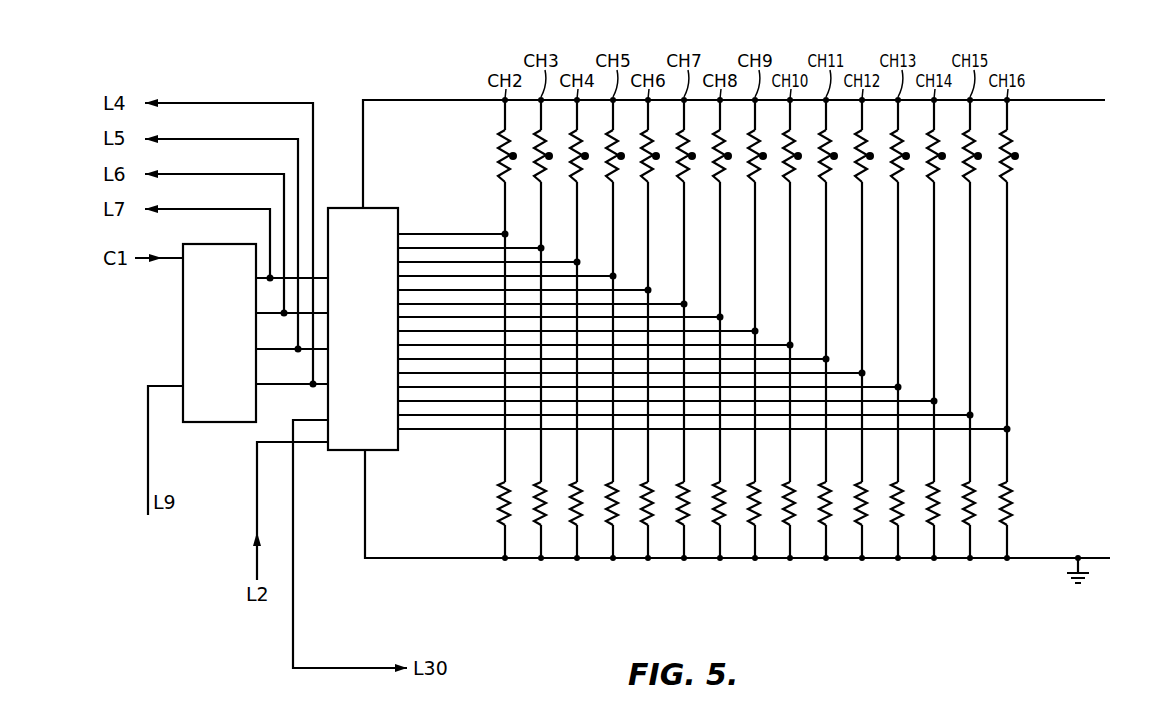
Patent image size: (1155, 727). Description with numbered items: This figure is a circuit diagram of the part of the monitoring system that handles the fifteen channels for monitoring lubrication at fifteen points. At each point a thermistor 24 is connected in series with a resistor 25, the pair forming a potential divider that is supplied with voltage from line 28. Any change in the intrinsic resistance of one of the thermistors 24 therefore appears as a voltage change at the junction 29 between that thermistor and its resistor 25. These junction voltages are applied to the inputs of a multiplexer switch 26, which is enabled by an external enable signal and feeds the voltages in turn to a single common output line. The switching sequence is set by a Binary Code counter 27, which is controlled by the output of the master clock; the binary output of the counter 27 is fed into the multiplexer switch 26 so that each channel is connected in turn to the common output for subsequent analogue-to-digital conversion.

The thermistor 24 is at (893, 172).
The resistor 25 is at (900, 490).
The multiplexer switch 26 is at (377, 372).
The Binary Code counter 27 is at (231, 372).
The line 28 is at (1083, 100).
The junction 29 is at (898, 387).